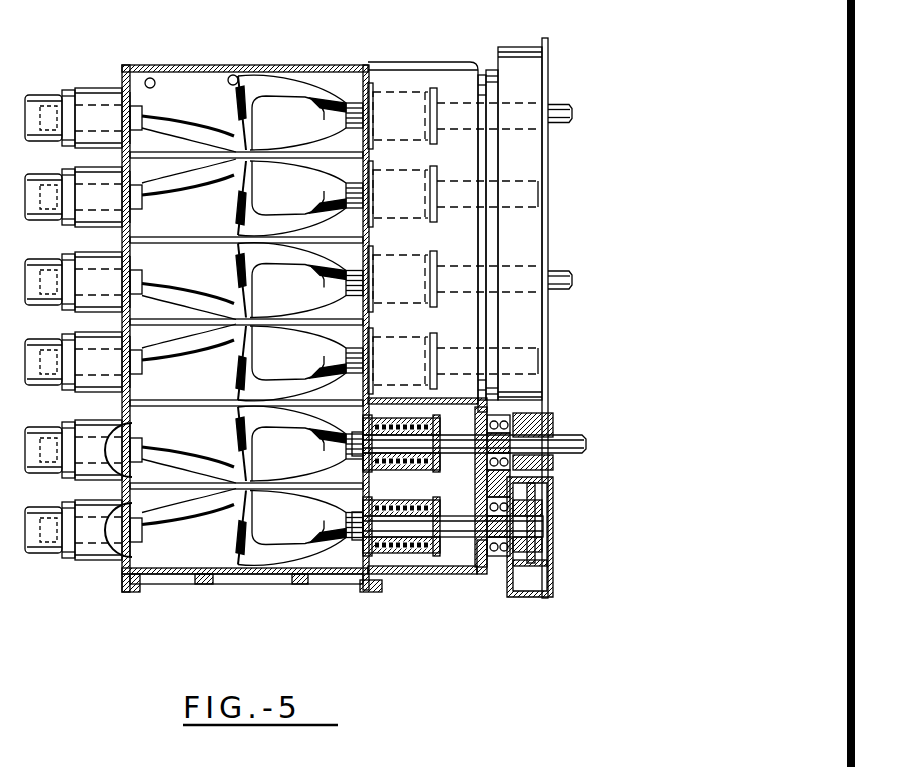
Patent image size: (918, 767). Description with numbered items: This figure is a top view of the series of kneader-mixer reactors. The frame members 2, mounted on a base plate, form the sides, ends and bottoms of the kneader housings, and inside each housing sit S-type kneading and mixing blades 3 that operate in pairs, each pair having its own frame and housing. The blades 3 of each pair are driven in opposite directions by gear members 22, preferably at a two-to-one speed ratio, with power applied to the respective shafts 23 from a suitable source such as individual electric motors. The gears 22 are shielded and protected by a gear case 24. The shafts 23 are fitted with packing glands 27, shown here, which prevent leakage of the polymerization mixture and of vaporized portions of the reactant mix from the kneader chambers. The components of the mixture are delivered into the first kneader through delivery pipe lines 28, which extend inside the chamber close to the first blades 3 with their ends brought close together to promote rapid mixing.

The frame member 2 is at (273, 66).
The kneading and mixing blade 3 is at (302, 116).
The gear member 22 is at (555, 420).
The shaft 23 is at (557, 104).
The gear case 24 is at (528, 47).
The packing gland 27 is at (385, 500).
The delivery pipe line 28 is at (233, 75).